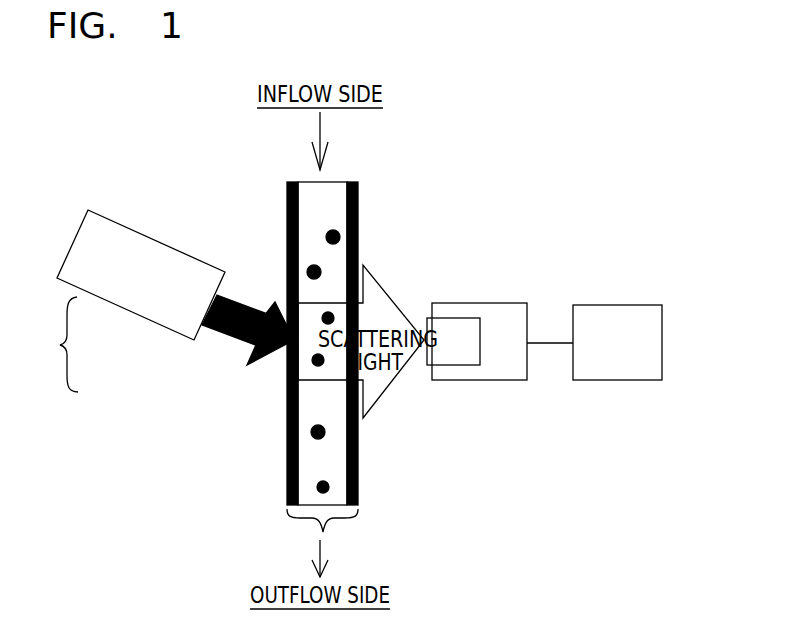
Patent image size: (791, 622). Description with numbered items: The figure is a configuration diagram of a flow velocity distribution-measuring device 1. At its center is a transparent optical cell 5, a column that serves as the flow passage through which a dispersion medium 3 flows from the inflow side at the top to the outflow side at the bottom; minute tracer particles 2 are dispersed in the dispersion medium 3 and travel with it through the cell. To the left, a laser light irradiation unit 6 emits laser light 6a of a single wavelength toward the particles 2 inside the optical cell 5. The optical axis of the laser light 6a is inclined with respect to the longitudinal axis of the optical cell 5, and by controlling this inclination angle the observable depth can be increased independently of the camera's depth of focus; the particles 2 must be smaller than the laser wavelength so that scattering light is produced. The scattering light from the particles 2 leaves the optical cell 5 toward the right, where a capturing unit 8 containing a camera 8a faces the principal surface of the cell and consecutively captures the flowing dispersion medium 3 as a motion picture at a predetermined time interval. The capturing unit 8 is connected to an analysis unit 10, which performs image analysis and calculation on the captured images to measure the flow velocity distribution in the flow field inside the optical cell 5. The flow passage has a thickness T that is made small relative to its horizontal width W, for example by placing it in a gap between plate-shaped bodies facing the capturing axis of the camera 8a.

The measuring device 1 is at (450, 197).
The particles 2 is at (318, 273).
The dispersion medium 3 is at (311, 409).
The optical cell 5 is at (287, 231).
The laser light irradiation unit 6 is at (127, 286).
The laser light 6a is at (248, 330).
The capturing unit 8 is at (482, 303).
The camera 8a is at (441, 357).
The analysis unit 10 is at (598, 357).
The horizontal width W is at (57, 344).
The thickness T is at (323, 532).